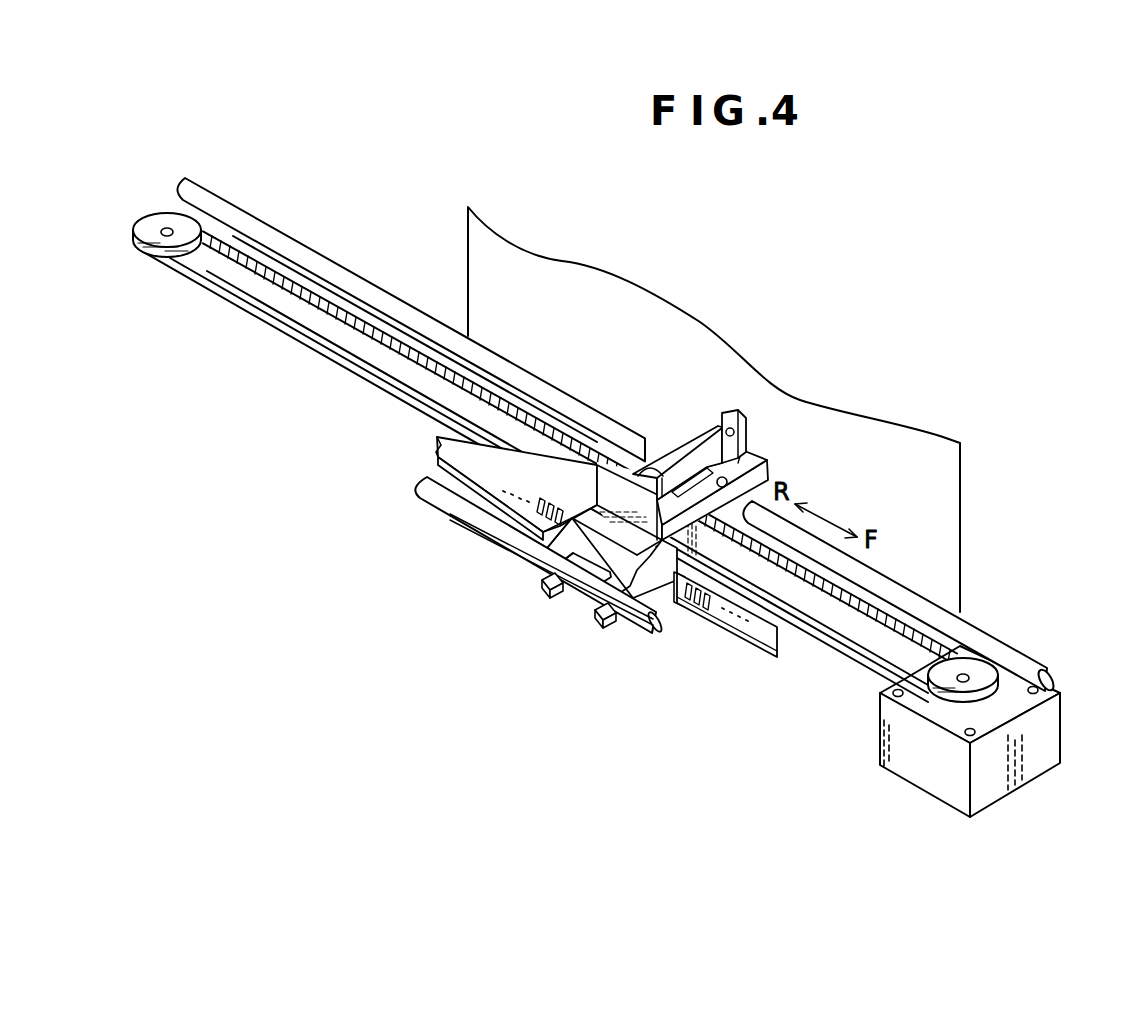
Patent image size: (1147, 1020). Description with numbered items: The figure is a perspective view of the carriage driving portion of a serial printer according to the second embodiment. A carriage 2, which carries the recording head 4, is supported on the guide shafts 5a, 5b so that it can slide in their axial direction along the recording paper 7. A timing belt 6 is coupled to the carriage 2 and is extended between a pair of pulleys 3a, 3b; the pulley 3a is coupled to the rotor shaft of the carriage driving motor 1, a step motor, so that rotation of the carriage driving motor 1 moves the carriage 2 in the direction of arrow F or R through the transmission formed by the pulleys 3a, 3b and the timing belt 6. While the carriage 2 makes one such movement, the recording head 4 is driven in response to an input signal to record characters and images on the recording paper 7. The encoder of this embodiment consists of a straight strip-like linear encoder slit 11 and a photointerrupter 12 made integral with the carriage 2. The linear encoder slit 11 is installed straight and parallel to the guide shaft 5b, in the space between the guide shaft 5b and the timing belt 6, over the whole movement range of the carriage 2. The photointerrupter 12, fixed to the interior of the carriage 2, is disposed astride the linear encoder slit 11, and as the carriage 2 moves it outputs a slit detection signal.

The carriage driving motor 1 is at (1030, 785).
The carriage 2 is at (655, 440).
The pulley 3a is at (950, 693).
The pulley 3b is at (154, 212).
The recording head 4 is at (668, 448).
The guide shaft 5a is at (1025, 658).
The guide shaft 5b is at (453, 516).
The timing belt 6 is at (863, 660).
The recording paper 7 is at (962, 485).
The linear encoder slit 11 is at (743, 637).
The photointerrupter 12 is at (684, 604).